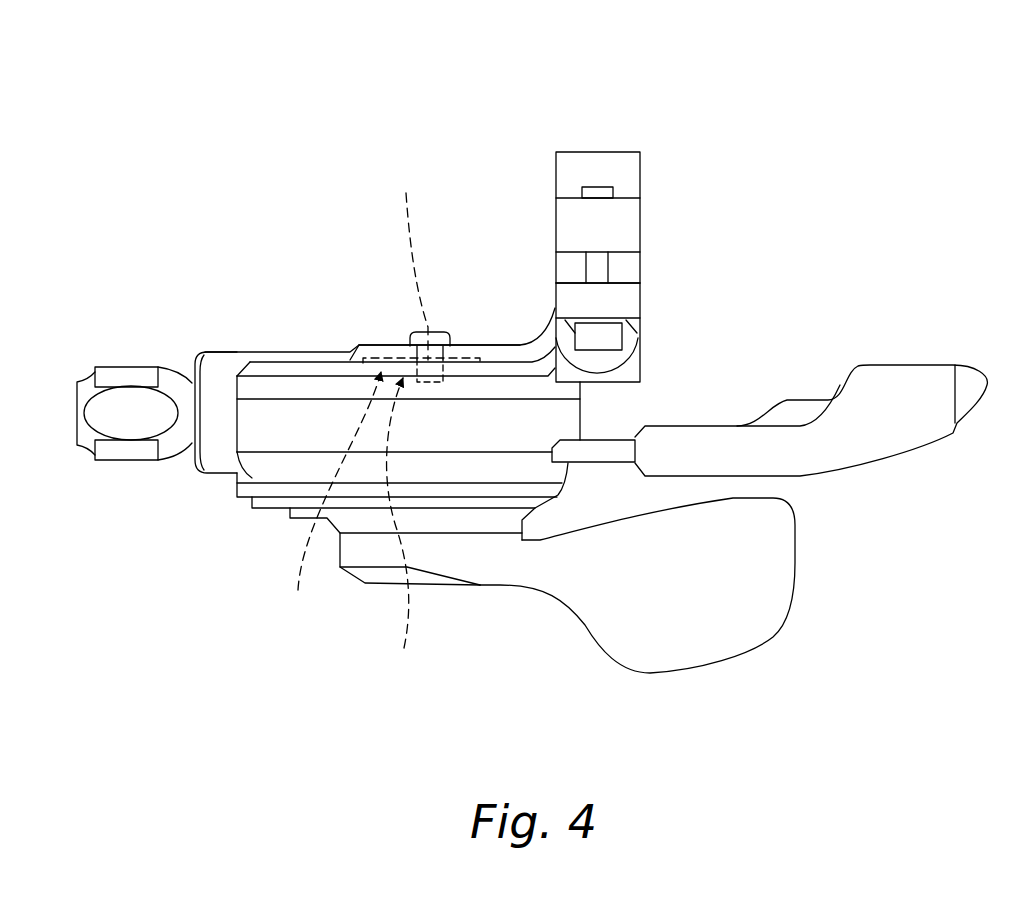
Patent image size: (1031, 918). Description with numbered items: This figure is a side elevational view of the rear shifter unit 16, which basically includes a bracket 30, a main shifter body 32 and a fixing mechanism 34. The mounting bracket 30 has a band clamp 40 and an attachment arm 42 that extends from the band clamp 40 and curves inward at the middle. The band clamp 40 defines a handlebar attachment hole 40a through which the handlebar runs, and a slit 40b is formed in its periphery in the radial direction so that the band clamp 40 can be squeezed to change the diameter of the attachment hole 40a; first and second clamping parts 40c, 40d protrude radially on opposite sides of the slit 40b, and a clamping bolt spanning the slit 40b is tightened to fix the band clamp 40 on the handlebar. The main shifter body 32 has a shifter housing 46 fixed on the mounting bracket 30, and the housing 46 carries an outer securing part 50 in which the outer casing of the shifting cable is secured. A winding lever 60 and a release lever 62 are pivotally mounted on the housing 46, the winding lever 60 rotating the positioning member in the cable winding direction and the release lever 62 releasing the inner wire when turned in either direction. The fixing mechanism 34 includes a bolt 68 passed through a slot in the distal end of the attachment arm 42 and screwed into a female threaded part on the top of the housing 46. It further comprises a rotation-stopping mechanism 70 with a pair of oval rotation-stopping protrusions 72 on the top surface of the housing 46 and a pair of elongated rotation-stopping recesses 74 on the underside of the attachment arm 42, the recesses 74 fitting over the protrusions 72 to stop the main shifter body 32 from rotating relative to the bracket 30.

The rear shifter unit 16 is at (597, 107).
The bracket 30 is at (643, 146).
The main shifter body 32 is at (243, 543).
The fixing mechanism 34 is at (415, 323).
The band clamp 40 is at (643, 216).
The handlebar attachment hole 40a is at (567, 297).
The slit 40b is at (632, 268).
The first clamping part 40c is at (572, 226).
The second clamping part 40d is at (616, 333).
The attachment arm 42 is at (480, 340).
The shifter housing 46 is at (260, 463).
The outer securing part 50 is at (115, 455).
The winding lever 60 is at (764, 546).
The release lever 62 is at (868, 378).
The bolt 68 is at (417, 340).
The rotation-stopping mechanism 70 is at (410, 530).
The rotation-stopping protrusions 72 is at (411, 259).
The rotation-stopping recesses 74 is at (329, 498).